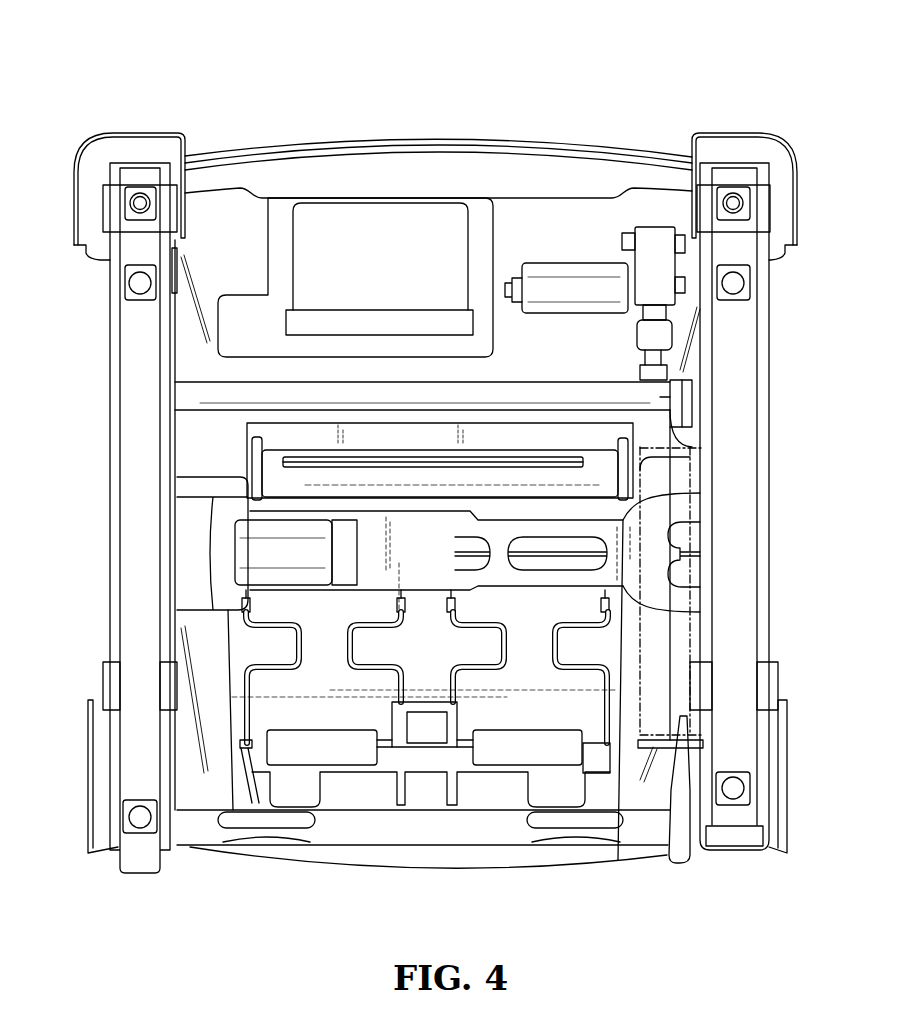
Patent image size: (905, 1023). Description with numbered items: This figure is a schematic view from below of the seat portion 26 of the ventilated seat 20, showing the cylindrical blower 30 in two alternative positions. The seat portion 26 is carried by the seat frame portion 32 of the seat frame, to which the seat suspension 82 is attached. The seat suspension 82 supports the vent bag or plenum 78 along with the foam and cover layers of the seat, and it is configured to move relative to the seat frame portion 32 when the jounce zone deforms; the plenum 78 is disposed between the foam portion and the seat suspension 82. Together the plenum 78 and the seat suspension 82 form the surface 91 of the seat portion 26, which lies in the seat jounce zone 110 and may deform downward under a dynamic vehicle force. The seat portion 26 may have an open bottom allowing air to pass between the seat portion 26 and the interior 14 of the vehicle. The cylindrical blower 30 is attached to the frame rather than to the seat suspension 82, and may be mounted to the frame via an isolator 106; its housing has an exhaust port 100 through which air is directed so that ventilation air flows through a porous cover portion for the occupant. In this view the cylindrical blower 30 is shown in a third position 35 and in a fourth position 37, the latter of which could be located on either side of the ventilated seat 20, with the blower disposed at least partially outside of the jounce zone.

The ventilated seat 20 is at (471, 84).
The seat portion 26 is at (401, 139).
The seat frame portion 32 is at (541, 212).
The exhaust port 100 is at (538, 460).
The isolator 106 is at (625, 481).
The interior 14 is at (716, 591).
The cylindrical blower 30 is at (280, 483).
The fourth position 37 is at (716, 647).
The third position 35 is at (305, 500).
The surface 91 is at (367, 645).
The seat suspension 82 is at (490, 626).
The plenum 78 is at (227, 683).
The seat jounce zone 110 is at (430, 683).